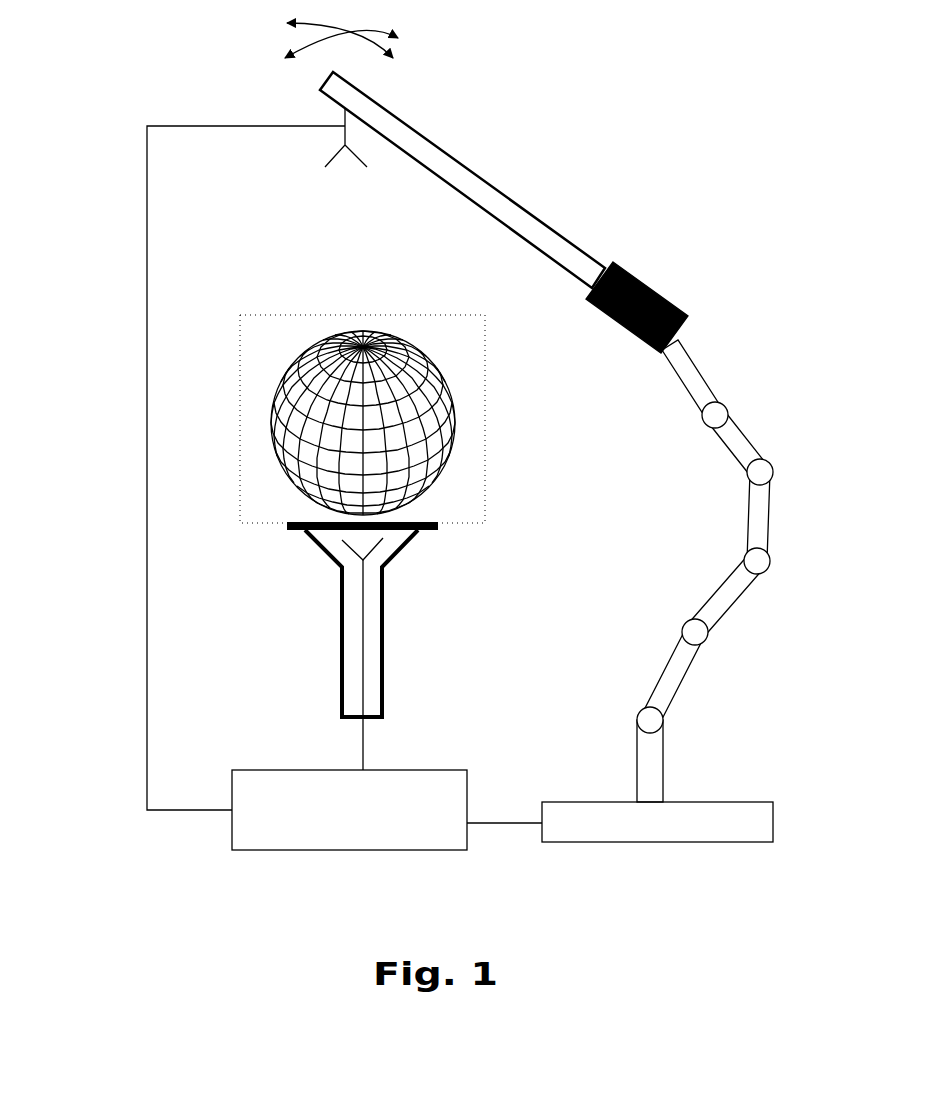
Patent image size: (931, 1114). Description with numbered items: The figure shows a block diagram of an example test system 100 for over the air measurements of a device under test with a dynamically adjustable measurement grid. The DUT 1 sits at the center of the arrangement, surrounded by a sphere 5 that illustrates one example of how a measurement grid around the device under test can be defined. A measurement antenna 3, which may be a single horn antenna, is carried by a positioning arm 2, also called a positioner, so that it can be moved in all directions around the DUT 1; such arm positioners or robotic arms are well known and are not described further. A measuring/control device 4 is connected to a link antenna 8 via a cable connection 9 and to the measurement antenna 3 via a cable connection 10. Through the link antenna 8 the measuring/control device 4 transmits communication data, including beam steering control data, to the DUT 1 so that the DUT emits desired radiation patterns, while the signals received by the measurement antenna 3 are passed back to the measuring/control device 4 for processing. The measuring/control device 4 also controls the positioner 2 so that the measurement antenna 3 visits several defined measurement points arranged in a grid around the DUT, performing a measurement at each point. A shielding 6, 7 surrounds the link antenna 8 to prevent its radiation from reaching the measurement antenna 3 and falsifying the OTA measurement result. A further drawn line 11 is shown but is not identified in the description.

The test system 100 is at (86, 65).
The device under test 1 is at (392, 428).
The positioning arm 2 is at (535, 153).
The measurement antenna 3 is at (347, 172).
The measuring/control device 4 is at (467, 790).
The sphere 5 is at (383, 322).
The shielding 6 is at (383, 683).
The shielding 7 is at (285, 528).
The link antenna 8 is at (373, 555).
The cable connection 9 is at (367, 752).
The cable connection 10 is at (150, 692).
The signal line to robot base 11 is at (495, 815).